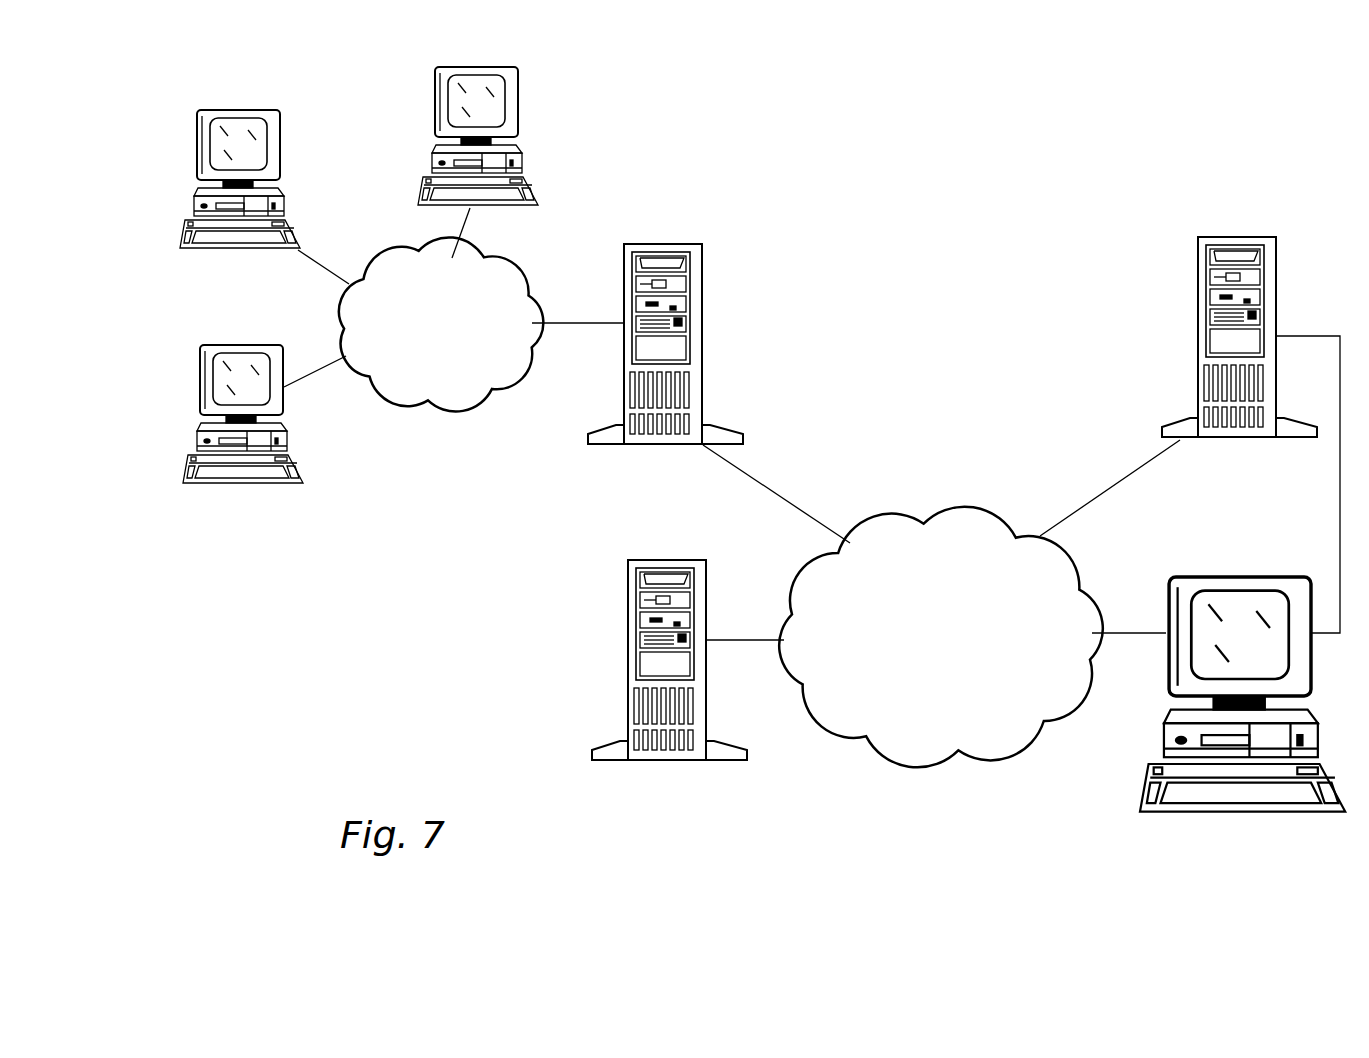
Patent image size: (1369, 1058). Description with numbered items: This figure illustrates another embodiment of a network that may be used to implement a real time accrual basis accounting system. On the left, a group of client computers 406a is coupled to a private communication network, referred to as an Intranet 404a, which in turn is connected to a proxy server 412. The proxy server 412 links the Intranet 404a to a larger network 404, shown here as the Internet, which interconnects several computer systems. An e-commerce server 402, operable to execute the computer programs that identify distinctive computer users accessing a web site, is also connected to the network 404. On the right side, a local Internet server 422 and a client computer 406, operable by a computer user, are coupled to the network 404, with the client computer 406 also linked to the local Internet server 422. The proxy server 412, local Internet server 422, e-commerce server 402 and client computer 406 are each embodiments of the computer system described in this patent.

The client computers 406a is at (359, 261).
The intranet 404a is at (413, 354).
The proxy server 412 is at (695, 344).
The LAN 404 is at (919, 666).
The e-commerce server 402 is at (669, 712).
The local Internet server 422 is at (1170, 337).
The client computer 406 is at (1242, 744).